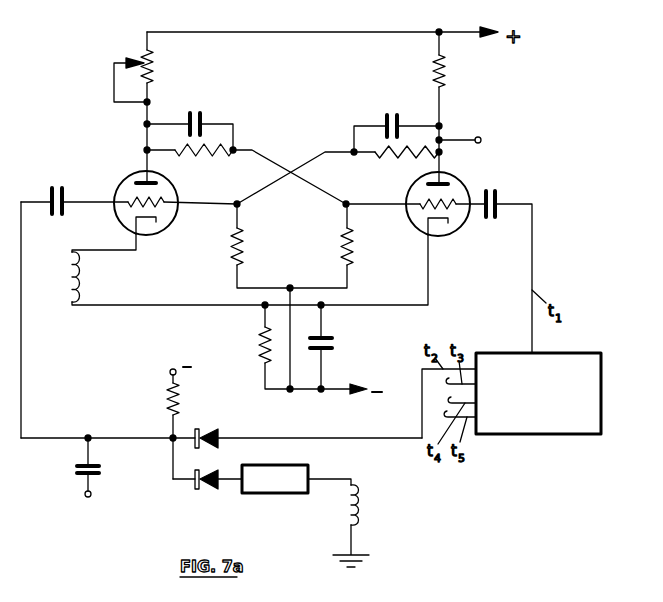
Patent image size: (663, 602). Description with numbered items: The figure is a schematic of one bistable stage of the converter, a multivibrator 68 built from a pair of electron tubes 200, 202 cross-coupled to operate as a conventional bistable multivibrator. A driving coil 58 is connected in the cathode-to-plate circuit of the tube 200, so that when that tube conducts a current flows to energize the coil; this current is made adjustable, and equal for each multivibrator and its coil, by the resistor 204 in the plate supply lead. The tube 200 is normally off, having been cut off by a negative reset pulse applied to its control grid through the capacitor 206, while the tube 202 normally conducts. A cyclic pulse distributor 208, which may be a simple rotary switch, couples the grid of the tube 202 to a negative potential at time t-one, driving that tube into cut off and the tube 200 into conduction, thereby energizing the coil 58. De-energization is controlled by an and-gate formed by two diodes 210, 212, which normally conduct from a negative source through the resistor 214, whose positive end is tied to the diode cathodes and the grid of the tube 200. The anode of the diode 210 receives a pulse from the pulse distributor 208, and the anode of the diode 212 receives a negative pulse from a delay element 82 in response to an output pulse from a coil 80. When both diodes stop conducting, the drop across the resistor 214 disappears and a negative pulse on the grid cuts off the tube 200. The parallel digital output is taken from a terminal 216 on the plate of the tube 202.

The resistor 204 is at (153, 66).
The electron tube 200 is at (126, 187).
The electron tube 202 is at (456, 187).
The multivibrator 68 is at (289, 150).
The terminal 216 is at (481, 136).
The driving coil 58 is at (80, 283).
The pulse distributor 208 is at (591, 363).
The resistor 214 is at (177, 397).
The diode 210 is at (216, 433).
The diode 212 is at (208, 487).
The capacitor 206 is at (98, 475).
The delay element 82 is at (286, 466).
The coil 80 is at (359, 515).